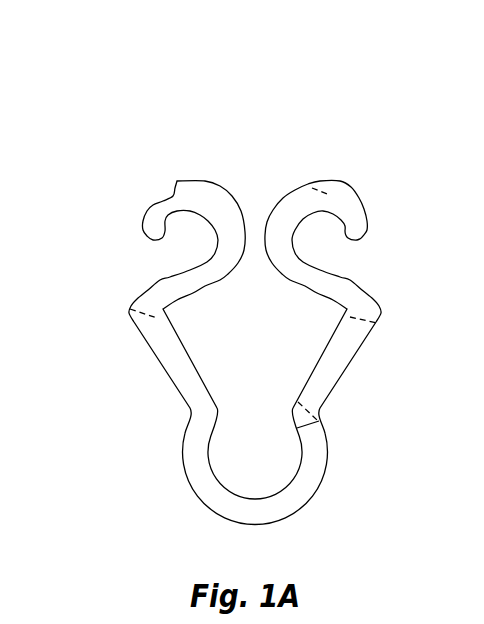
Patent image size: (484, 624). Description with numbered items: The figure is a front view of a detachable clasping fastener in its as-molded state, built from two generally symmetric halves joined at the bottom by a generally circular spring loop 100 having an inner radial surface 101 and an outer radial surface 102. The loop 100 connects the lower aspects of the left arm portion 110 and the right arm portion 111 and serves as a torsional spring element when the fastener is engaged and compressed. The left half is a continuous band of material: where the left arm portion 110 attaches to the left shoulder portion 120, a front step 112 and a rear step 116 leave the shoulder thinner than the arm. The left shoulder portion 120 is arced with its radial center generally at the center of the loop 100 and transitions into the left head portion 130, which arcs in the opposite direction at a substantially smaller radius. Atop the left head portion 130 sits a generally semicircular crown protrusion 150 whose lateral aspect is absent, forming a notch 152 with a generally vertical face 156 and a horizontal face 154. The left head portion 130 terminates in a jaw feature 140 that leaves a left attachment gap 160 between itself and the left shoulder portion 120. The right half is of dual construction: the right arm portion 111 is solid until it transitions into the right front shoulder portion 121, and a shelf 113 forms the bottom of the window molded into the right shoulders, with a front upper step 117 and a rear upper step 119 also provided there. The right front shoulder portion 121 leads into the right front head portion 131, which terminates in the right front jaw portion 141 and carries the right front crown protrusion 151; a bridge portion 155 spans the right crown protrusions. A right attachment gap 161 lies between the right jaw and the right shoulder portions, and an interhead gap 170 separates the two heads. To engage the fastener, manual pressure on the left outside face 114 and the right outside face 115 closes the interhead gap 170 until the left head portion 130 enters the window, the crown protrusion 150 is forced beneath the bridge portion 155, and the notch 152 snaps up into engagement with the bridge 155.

The spring loop 100 is at (245, 512).
The inner radial surface 101 is at (290, 482).
The outer radial surface 102 is at (290, 517).
The left arm portion 110 is at (181, 370).
The right arm portion 111 is at (328, 373).
The front step 112 is at (150, 316).
The shelf 113 is at (378, 324).
The left outside face 114 is at (158, 361).
The right outside face 115 is at (352, 358).
The rear step 116 is at (132, 305).
The front upper step 117 is at (299, 427).
The rear upper step 119 is at (296, 398).
The left shoulder portion 120 is at (180, 283).
The right front shoulder portion 121 is at (375, 285).
The left head portion 130 is at (220, 218).
The right front head portion 131 is at (287, 215).
The jaw feature 140 is at (153, 226).
The right front jaw portion 141 is at (352, 230).
The crown protrusion 150 is at (188, 184).
The right front crown protrusion 151 is at (338, 186).
The notch 152 is at (167, 193).
The horizontal face of notch 154 is at (160, 200).
The bridge portion 155 is at (322, 187).
The vertical face of notch 156 is at (166, 180).
The left attachment gap 160 is at (160, 254).
The right attachment gap 161 is at (355, 255).
The interhead gap 170 is at (256, 227).